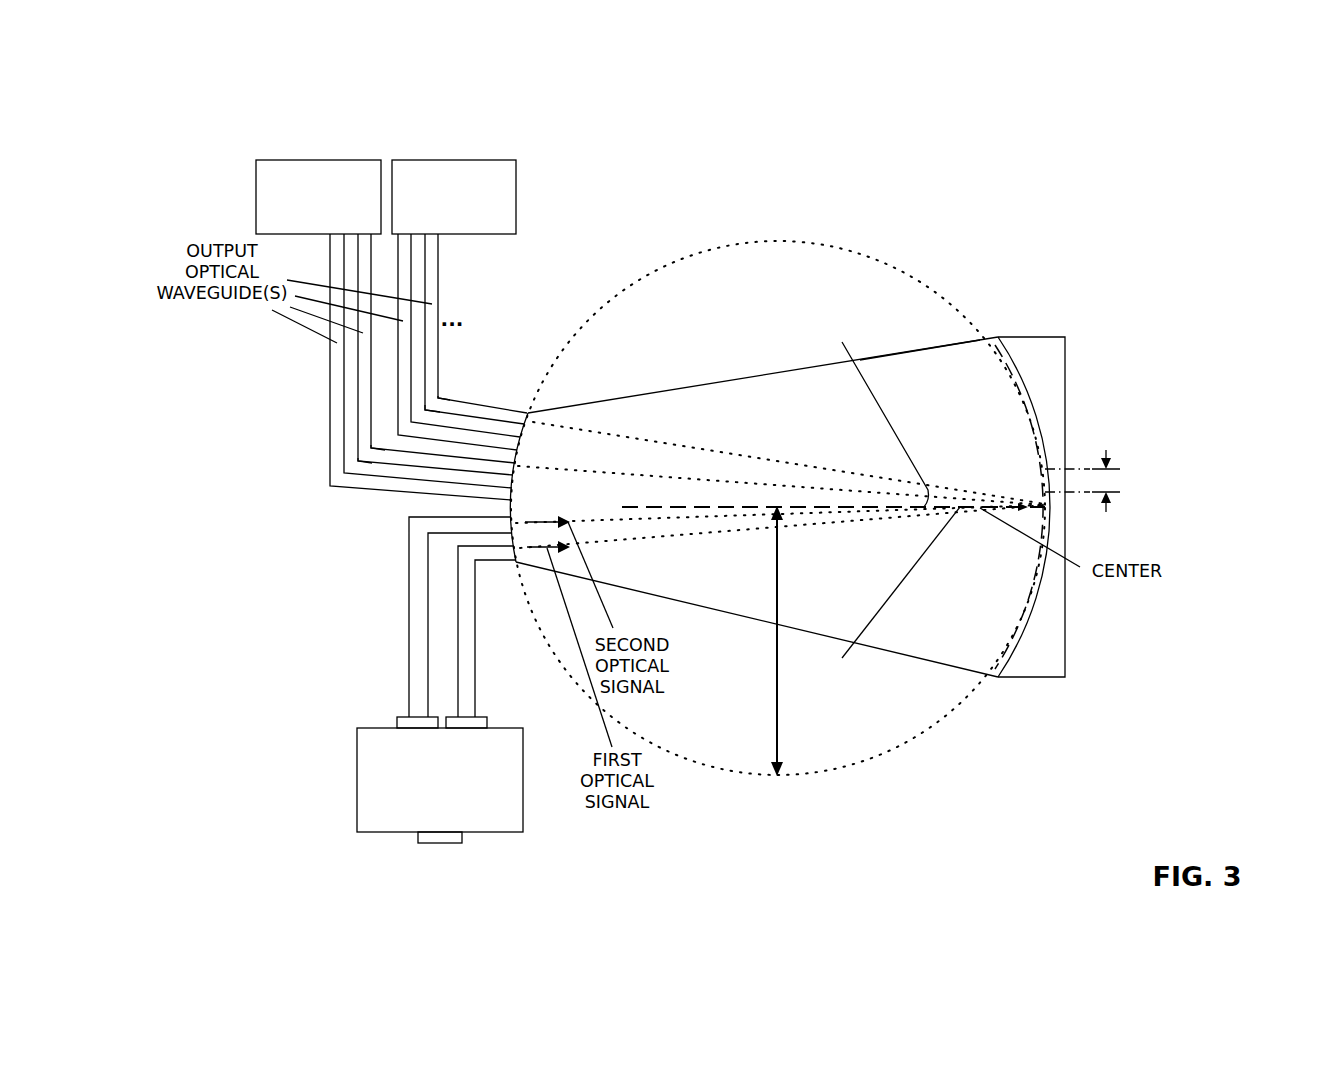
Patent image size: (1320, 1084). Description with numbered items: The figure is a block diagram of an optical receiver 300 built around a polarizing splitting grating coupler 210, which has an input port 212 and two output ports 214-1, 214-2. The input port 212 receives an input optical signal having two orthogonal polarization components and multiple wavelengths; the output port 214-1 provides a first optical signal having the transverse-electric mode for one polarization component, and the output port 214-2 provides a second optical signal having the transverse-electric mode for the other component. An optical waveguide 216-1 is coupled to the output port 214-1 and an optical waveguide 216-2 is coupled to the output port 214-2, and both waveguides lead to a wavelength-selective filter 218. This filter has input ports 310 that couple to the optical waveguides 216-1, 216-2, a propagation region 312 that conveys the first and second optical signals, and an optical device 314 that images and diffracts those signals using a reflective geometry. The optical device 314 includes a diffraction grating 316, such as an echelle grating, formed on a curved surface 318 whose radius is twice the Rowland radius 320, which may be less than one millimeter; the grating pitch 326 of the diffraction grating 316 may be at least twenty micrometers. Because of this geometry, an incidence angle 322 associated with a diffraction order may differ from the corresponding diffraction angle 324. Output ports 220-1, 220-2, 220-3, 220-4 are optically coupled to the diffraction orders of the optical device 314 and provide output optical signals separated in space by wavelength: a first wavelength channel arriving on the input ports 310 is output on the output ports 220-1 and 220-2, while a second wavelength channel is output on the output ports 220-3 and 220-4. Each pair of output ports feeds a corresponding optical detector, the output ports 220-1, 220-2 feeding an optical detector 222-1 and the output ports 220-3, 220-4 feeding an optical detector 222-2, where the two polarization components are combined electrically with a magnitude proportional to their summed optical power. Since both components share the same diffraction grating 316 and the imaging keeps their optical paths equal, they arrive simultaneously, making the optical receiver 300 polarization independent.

The optical receiver 300 is at (1077, 173).
The optical detector 222-1 is at (318, 197).
The optical detector 222-2 is at (454, 197).
The output port 220-1 is at (400, 485).
The output port 220-2 is at (400, 458).
The output port 220-3 is at (423, 428).
The output port 220-4 is at (465, 412).
The input ports 310 is at (490, 550).
The optical waveguide 216-1 is at (468, 653).
The optical waveguide 216-2 is at (423, 665).
The polarizing splitting grating coupler 210 is at (440, 780).
The input port 212 is at (423, 835).
The output port 214-1 is at (470, 722).
The output port 214-2 is at (402, 723).
The propagation region 312 is at (716, 417).
The optical device 314 is at (1043, 337).
The diffraction grating 316 is at (1043, 433).
The curved surface 318 is at (1032, 638).
The Rowland radius 320 is at (777, 647).
The incidence angle 322 is at (888, 605).
The diffraction angle 324 is at (867, 406).
The grating pitch 326 is at (1108, 481).
The wavelength-selective filter 218 is at (903, 352).